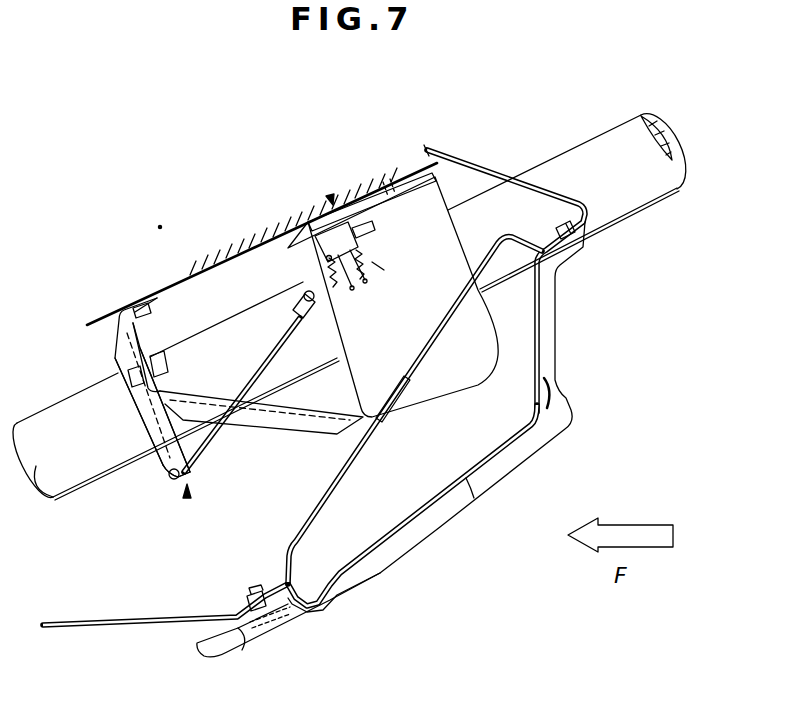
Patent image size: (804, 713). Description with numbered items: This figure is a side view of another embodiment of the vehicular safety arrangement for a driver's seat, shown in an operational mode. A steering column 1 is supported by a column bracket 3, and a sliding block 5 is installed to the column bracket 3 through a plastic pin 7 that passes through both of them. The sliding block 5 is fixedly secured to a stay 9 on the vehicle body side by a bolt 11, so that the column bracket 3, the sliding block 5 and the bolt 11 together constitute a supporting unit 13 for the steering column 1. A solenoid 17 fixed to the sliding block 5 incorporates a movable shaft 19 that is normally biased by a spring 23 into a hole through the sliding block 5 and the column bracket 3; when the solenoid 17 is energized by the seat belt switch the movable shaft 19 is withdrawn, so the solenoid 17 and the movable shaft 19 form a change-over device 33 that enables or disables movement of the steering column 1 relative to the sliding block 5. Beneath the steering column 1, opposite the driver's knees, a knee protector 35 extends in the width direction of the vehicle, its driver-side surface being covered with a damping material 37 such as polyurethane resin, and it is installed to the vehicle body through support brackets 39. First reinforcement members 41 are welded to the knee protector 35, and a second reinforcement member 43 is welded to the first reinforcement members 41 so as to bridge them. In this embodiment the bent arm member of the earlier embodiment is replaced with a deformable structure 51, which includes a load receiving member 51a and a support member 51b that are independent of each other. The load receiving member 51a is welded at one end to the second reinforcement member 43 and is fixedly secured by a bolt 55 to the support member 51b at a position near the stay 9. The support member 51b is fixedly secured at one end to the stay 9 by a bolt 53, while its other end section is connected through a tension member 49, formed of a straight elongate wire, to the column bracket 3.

The steering column 1 is at (637, 200).
The column bracket 3 is at (274, 276).
The sliding block 5 is at (362, 202).
The plastic pin 7 is at (390, 180).
The stay 9 is at (213, 212).
The bolt 11 is at (368, 232).
The supporting unit 13 is at (331, 198).
The solenoid 17 is at (350, 244).
The movable shaft 19 is at (352, 295).
The spring 23 is at (373, 283).
The change-over device 33 is at (383, 270).
The knee protector 35 is at (435, 536).
The damping material 37 is at (524, 458).
The support bracket 39 is at (482, 165).
The first reinforcement member 41 is at (267, 547).
The second reinforcement member 43 is at (393, 407).
The tension member 49 is at (208, 432).
The deformable structure 51 is at (152, 455).
The load receiving member 51a is at (272, 424).
The support member 51b is at (130, 462).
The bolt 53 is at (218, 319).
The bolt 55 is at (170, 366).